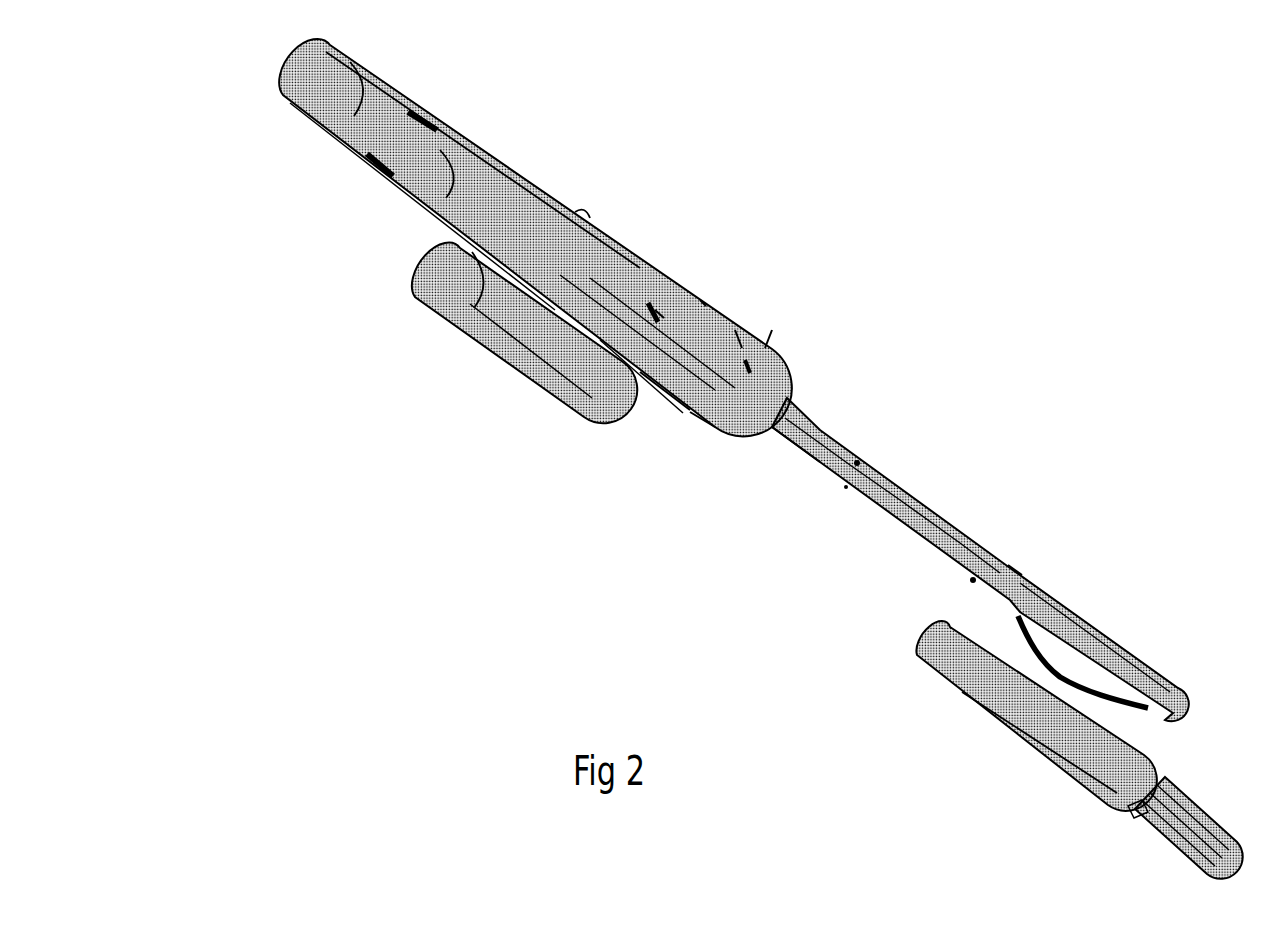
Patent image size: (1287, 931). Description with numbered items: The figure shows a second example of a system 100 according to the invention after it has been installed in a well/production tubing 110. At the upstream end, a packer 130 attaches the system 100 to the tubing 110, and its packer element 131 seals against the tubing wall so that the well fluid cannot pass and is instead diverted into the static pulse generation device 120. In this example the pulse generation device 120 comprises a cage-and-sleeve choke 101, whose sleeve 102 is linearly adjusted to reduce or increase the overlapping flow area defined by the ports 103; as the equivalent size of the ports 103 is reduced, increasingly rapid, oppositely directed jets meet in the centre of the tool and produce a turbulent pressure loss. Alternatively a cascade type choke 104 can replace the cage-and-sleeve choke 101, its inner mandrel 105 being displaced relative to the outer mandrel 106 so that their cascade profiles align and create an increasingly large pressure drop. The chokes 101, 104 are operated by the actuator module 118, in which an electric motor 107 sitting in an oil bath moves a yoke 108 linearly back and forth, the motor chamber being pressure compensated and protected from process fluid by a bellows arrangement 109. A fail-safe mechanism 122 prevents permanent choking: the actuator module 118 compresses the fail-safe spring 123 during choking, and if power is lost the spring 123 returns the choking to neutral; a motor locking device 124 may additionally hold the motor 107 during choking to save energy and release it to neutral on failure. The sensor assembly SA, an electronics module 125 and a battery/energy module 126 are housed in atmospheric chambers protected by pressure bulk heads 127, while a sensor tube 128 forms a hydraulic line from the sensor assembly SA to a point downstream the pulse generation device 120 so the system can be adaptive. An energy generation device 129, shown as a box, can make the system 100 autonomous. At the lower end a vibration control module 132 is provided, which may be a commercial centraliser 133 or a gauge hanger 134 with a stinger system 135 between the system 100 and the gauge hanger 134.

The system 100 is at (765, 196).
The cage-and-sleeve choke 101 is at (614, 240).
The sleeve 102 is at (588, 268).
The ports 103 is at (642, 261).
The cascade type choke 104 is at (515, 360).
The inner mandrel 105 is at (548, 362).
The outer mandrel 106 is at (570, 395).
The electric motor 107 is at (780, 406).
The yoke 108 is at (674, 402).
The bellows arrangement 109 is at (683, 413).
The well/production tubing 110 is at (709, 433).
The actuator module 118 is at (819, 332).
The static pulse generation device 120 is at (735, 330).
The fail-safe mechanism 122 is at (705, 296).
The fail-safe spring 123 is at (669, 301).
The motor locking device 124 is at (859, 441).
The electronics module 125 is at (920, 448).
The battery/energy module 126 is at (975, 529).
The pressure bulk heads 127 is at (810, 468).
The sensor tube 128 is at (772, 446).
The energy generation device 129 is at (975, 580).
The packer 130 is at (470, 148).
The packer element 131 is at (449, 108).
The vibration control module 132 is at (1012, 572).
The centraliser 133 is at (1084, 599).
The gauge hanger 134 is at (1187, 813).
The stinger system 135 is at (1023, 733).
The sensor assembly SA is at (846, 487).